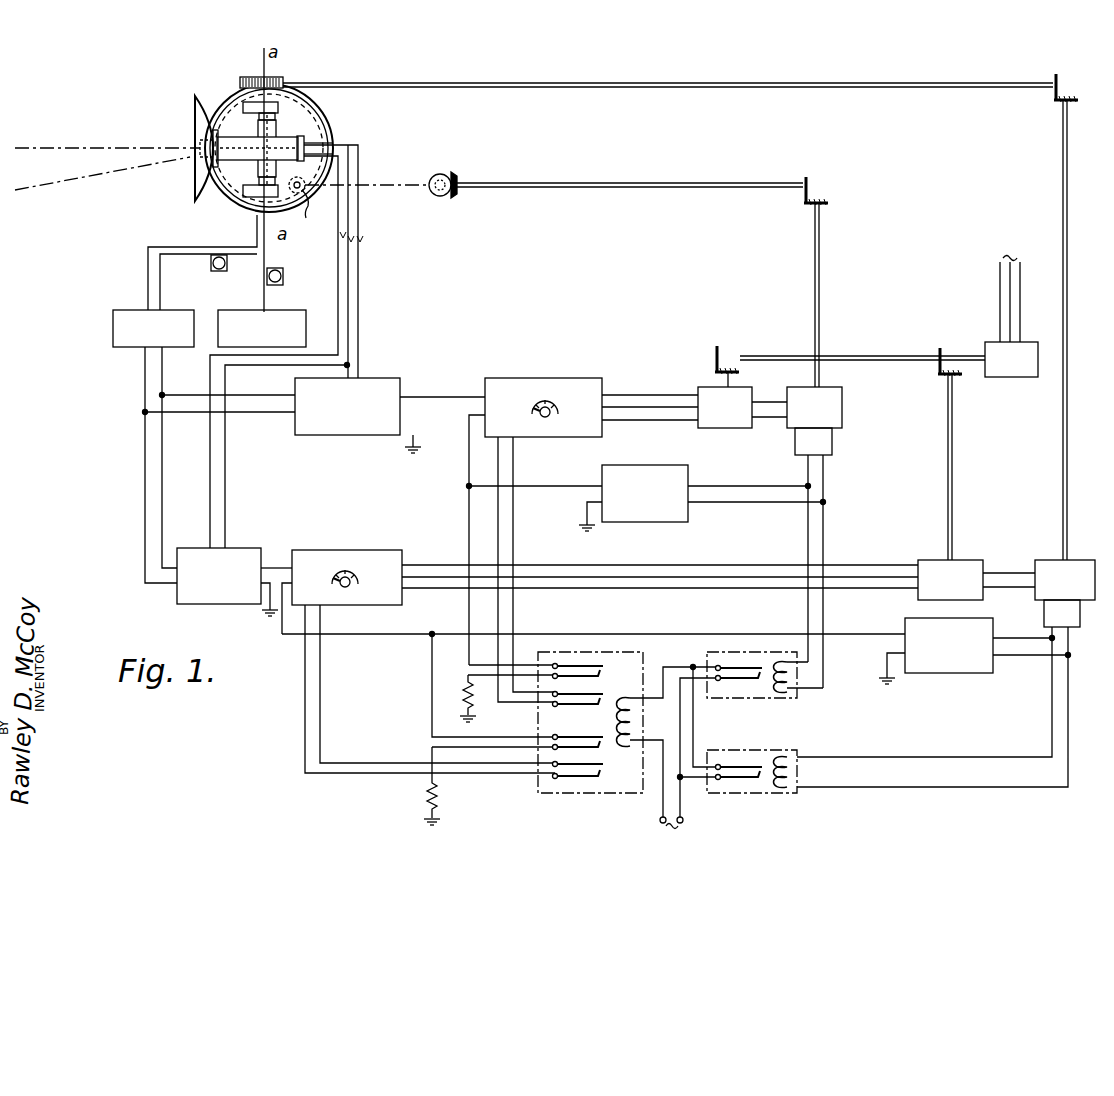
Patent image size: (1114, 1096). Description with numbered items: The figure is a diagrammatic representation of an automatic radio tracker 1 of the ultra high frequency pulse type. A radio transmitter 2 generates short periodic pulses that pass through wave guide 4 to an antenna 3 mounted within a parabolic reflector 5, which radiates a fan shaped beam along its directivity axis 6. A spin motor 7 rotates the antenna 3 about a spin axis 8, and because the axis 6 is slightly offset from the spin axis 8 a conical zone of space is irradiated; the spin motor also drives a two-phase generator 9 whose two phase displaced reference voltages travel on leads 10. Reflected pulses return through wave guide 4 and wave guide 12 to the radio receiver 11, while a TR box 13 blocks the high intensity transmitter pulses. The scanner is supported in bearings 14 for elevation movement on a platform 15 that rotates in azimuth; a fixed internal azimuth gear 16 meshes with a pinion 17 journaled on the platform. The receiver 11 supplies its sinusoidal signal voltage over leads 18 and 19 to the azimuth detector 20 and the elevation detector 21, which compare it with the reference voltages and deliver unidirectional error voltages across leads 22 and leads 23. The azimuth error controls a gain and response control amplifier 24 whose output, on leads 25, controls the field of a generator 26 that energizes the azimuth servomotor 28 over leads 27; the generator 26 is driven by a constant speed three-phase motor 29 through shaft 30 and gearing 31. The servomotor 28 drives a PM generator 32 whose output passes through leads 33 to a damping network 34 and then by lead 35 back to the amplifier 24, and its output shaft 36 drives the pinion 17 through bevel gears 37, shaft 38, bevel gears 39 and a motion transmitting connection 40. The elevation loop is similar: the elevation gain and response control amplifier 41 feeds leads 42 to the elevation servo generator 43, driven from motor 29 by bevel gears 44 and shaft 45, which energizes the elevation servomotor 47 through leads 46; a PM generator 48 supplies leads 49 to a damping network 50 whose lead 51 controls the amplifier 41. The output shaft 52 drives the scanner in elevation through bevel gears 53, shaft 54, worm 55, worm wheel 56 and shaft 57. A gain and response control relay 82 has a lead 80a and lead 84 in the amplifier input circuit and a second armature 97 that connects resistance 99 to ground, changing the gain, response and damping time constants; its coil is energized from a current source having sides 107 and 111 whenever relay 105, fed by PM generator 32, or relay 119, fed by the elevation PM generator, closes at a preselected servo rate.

The radio tracker 1 is at (180, 109).
The radio transmitter 2 is at (290, 310).
The antenna 3 is at (190, 141).
The wave guide 4 is at (266, 258).
The parabolic reflector 5 is at (195, 180).
The directivity axis 6 is at (74, 178).
The spin motor 7 is at (284, 142).
The spin axis 8 is at (82, 146).
The two-phase generator 9 is at (319, 144).
The leads 10 is at (363, 272).
The radio receiver 11 is at (113, 323).
The wave guide 12 is at (184, 244).
The TR box 13 is at (232, 246).
The bearings 14 is at (250, 108).
The platform 15 is at (312, 107).
The fixed internal azimuth gear 16 is at (306, 224).
The pinion 17 is at (300, 192).
The lead 18 is at (260, 396).
The lead 19 is at (142, 486).
The azimuth detector 20 is at (314, 436).
The elevation detector 21 is at (246, 548).
The leads 22 is at (437, 402).
The leads 23 is at (270, 574).
The gain and response control amplifier 24 is at (560, 364).
The leads 25 is at (639, 412).
The generator 26 is at (735, 428).
The leads 27 is at (766, 416).
The azimuth servomotor 28 is at (842, 416).
The three-phase motor 29 is at (1009, 382).
The shaft 30 is at (880, 355).
The gearing 31 is at (720, 362).
The PM generator 32 is at (832, 448).
The leads 33 is at (742, 505).
The damping network 34 is at (646, 464).
The lead 35 is at (466, 476).
The output shaft 36 is at (820, 274).
The bevel gears 37 is at (820, 186).
The shaft 38 is at (627, 183).
The bevel gears 39 is at (441, 176).
The motion transmitting connection 40 is at (392, 181).
The elevation gain and response control amplifier 41 is at (348, 550).
The leads 42 is at (424, 580).
The elevation servo generator 43 is at (968, 558).
The bevel gears 44 is at (950, 352).
The shaft 45 is at (954, 464).
The leads 46 is at (1000, 584).
The elevation servomotor 47 is at (1046, 552).
The PM generator 48 is at (1044, 614).
The leads 49 is at (1060, 635).
The damping network 50 is at (962, 673).
The lead 51 is at (744, 632).
The output shaft 52 is at (1062, 496).
The bevel gears 53 is at (1062, 88).
The shaft 54 is at (441, 83).
The worm 55 is at (286, 78).
The worm wheel 56 is at (247, 74).
The shaft 57 is at (230, 89).
The lead 80a is at (514, 607).
The gain and response control relay 82 is at (543, 800).
The lead 84 is at (518, 629).
The second armature 97 is at (468, 524).
The resistance 99 is at (462, 692).
The relay 105 is at (801, 698).
The one side of current source 107 is at (684, 821).
The other side of current source 111 is at (660, 820).
The relay 119 is at (801, 794).